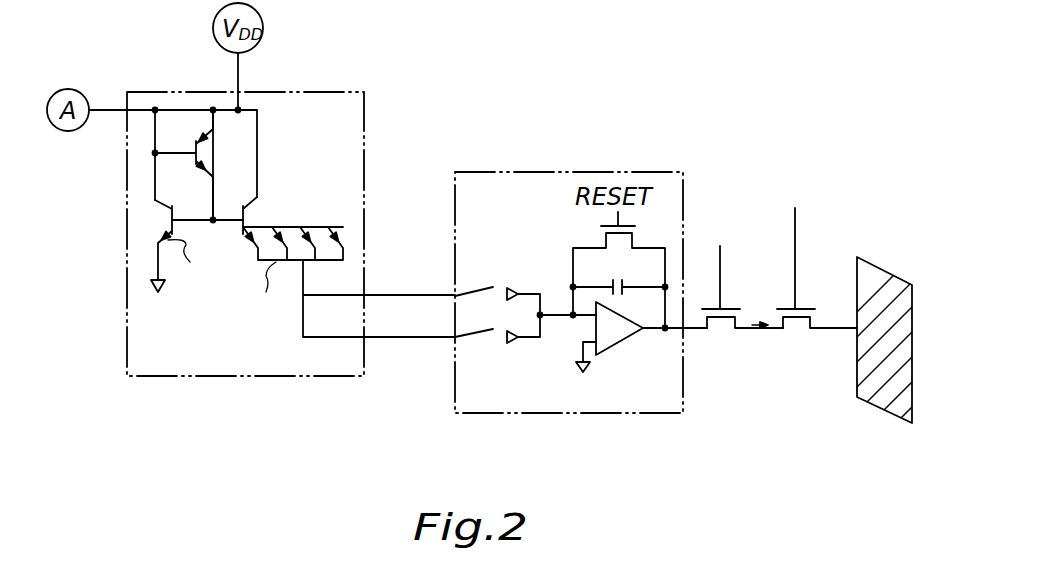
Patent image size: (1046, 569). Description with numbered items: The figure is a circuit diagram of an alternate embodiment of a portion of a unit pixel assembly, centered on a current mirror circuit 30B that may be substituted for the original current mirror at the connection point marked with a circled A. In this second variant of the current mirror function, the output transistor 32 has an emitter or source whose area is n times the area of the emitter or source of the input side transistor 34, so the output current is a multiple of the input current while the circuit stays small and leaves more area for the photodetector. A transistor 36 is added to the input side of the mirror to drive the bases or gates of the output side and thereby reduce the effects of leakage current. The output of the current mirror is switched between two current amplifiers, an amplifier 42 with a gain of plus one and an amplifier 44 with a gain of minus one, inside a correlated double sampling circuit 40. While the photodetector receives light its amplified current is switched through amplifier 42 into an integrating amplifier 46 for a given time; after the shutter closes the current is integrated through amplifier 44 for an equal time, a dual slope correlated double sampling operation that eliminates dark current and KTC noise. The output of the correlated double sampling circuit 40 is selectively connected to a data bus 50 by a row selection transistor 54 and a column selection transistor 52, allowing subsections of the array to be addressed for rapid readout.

The current mirror circuit 30B is at (326, 92).
The output transistor 32 is at (249, 210).
The input side transistor 34 is at (168, 212).
The transistor 36 is at (204, 140).
The correlated double sampling circuit 40 is at (669, 172).
The amplifier 42 is at (504, 288).
The amplifier 44 is at (504, 344).
The integrating amplifier 46 is at (626, 345).
The data bus 50 is at (878, 266).
The column selection transistor 52 is at (787, 322).
The row selection transistor 54 is at (711, 322).